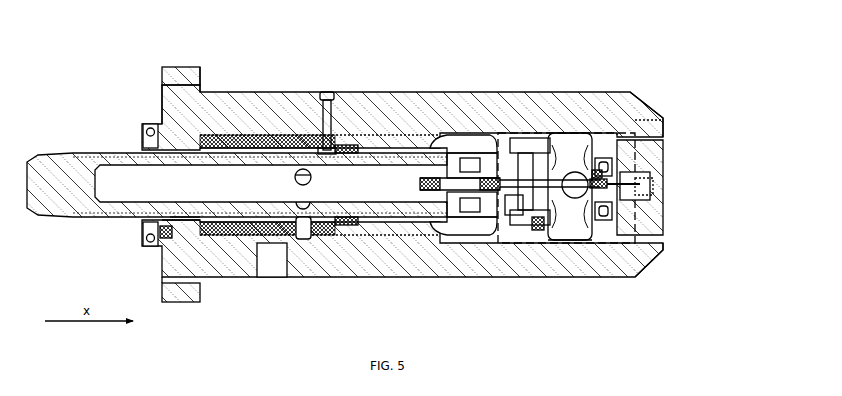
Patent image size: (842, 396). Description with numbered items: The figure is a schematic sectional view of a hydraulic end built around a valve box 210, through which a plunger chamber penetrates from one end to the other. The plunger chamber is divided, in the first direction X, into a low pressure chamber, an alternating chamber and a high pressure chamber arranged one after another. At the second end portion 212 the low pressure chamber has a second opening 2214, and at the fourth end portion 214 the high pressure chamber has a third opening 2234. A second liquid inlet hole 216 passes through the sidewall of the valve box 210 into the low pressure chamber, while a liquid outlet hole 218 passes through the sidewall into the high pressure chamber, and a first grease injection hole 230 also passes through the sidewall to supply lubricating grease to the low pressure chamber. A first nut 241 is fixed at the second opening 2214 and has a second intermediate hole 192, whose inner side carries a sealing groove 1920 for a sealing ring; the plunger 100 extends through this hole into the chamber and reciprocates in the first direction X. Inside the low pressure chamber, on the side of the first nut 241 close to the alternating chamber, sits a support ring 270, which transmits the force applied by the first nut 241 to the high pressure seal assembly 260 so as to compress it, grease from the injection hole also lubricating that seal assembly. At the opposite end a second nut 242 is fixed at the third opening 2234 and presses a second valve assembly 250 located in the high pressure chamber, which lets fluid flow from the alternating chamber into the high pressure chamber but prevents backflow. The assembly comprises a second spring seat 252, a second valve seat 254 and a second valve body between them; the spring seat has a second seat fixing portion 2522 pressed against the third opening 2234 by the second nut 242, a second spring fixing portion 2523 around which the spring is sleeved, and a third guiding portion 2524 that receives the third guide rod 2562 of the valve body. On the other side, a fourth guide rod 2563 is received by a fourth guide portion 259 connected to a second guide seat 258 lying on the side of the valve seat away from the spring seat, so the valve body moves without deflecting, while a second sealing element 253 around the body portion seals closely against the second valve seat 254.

The plunger 100 is at (238, 160).
The second intermediate hole 192 is at (168, 212).
The sealing groove 1920 is at (177, 220).
The valve box 210 is at (390, 120).
The second end portion 212 is at (166, 141).
The fourth end portion 214 is at (653, 127).
The second liquid inlet hole 216 is at (274, 262).
The liquid outlet hole 218 is at (620, 198).
The second opening 2214 is at (157, 128).
The third opening 2234 is at (637, 138).
The first grease injection hole 230 is at (350, 148).
The first nut 241 is at (163, 232).
The second nut 242 is at (645, 218).
The second valve assembly 250 is at (557, 241).
The second spring seat 252 is at (620, 198).
The second seat fixing portion 2522 is at (610, 148).
The second spring fixing portion 2523 is at (598, 176).
The third guiding portion 2524 is at (604, 184).
The second sealing element 253 is at (541, 224).
The second valve seat 254 is at (523, 223).
The third guide rod 2562 is at (635, 184).
The fourth guide rod 2563 is at (514, 225).
The second guide seat 258 is at (520, 186).
The fourth guide portion 259 is at (509, 203).
The high pressure seal assembly 260 is at (325, 116).
The support ring 270 is at (301, 232).